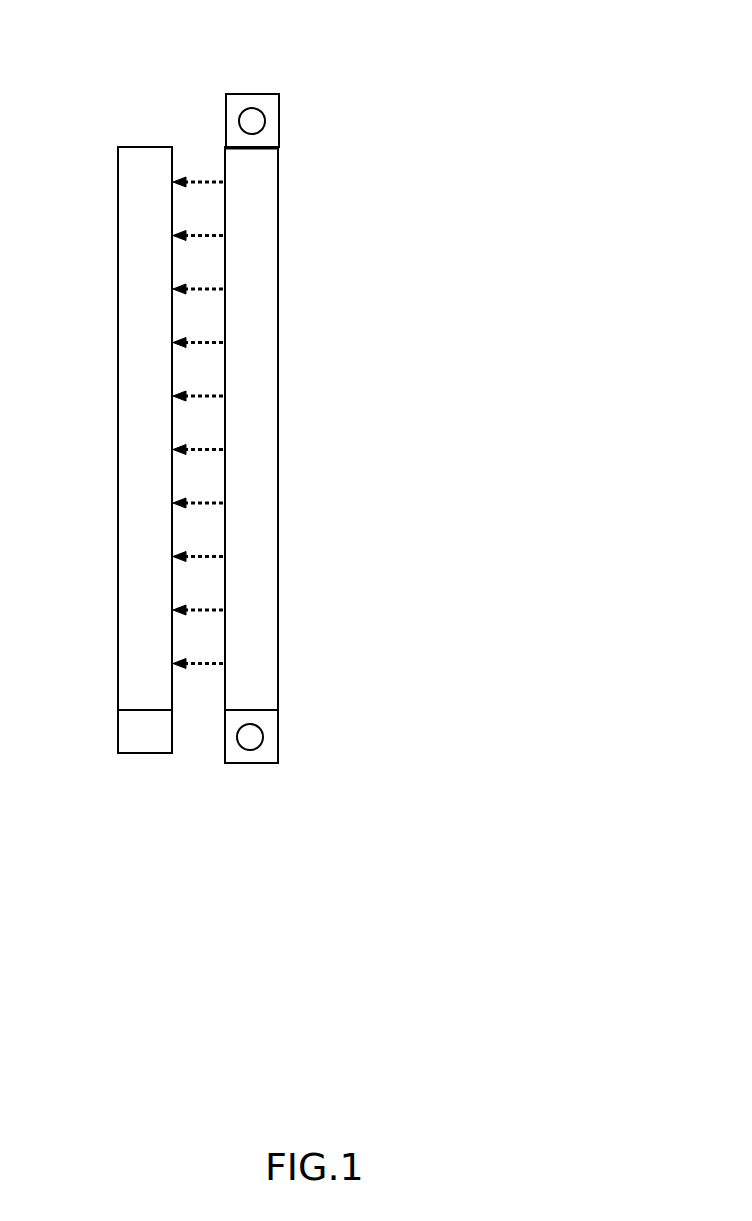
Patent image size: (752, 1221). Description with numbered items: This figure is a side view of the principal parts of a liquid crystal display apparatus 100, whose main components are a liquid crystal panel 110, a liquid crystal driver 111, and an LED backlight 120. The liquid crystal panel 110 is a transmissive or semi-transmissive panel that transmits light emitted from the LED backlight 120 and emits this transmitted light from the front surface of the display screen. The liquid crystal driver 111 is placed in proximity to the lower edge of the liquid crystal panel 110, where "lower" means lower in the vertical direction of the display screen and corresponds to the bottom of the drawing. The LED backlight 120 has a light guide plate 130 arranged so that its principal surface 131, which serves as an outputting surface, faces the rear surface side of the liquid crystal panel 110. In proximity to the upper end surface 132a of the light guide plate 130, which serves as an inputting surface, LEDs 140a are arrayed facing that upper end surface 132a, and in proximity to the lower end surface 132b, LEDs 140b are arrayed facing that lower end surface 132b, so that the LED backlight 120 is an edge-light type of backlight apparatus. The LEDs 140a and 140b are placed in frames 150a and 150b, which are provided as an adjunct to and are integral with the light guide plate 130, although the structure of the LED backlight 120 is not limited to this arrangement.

The liquid crystal display apparatus 100 is at (539, 108).
The liquid crystal panel 110 is at (125, 638).
The liquid crystal driver 111 is at (140, 753).
The LED backlight 120 is at (278, 457).
The light guide plate 130 is at (268, 355).
The principal surface 131 is at (225, 157).
The upper end surface 132a is at (268, 149).
The lower end surface 132b is at (238, 710).
The LEDs 140a is at (263, 117).
The LEDs 140b is at (263, 737).
The frame 150a is at (243, 94).
The frame 150b is at (260, 763).